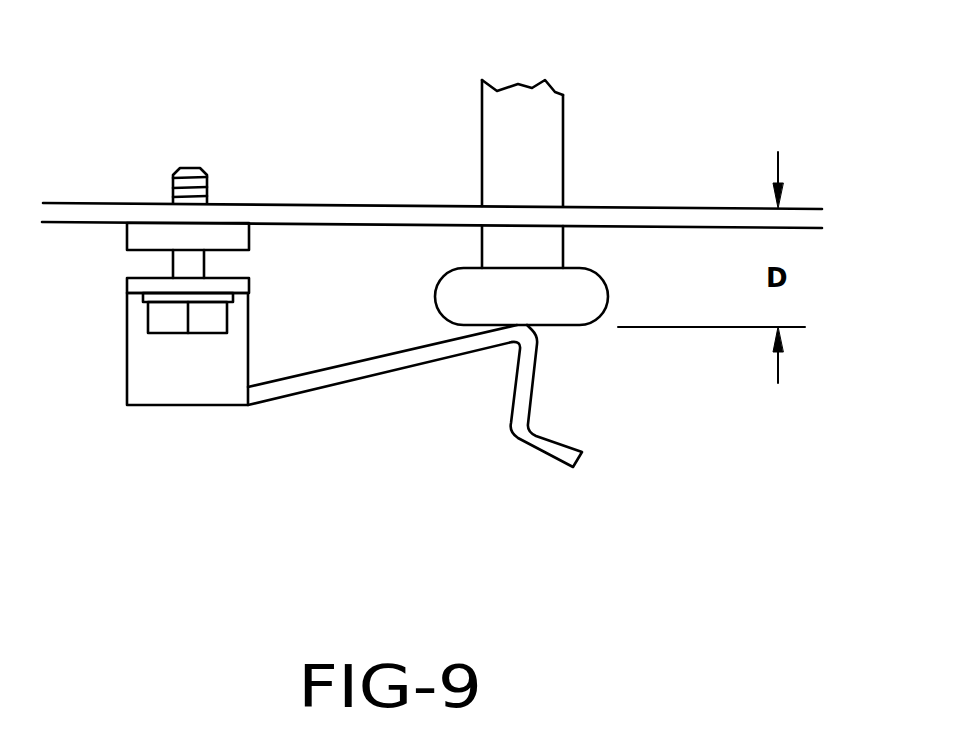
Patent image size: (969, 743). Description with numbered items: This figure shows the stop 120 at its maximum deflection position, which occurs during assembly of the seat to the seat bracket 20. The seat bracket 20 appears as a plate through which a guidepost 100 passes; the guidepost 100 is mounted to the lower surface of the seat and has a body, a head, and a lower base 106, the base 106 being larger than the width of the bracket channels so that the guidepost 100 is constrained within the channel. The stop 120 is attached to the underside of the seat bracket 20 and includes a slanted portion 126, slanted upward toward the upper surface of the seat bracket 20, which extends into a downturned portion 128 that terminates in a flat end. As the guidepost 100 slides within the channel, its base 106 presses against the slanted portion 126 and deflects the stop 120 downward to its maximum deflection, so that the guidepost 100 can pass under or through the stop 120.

The seat bracket 20 is at (635, 208).
The guidepost 100 is at (540, 94).
The base 106 is at (467, 290).
The stop 120 is at (162, 430).
The slanted portion 126 is at (337, 387).
The downturned portion 128 is at (530, 397).